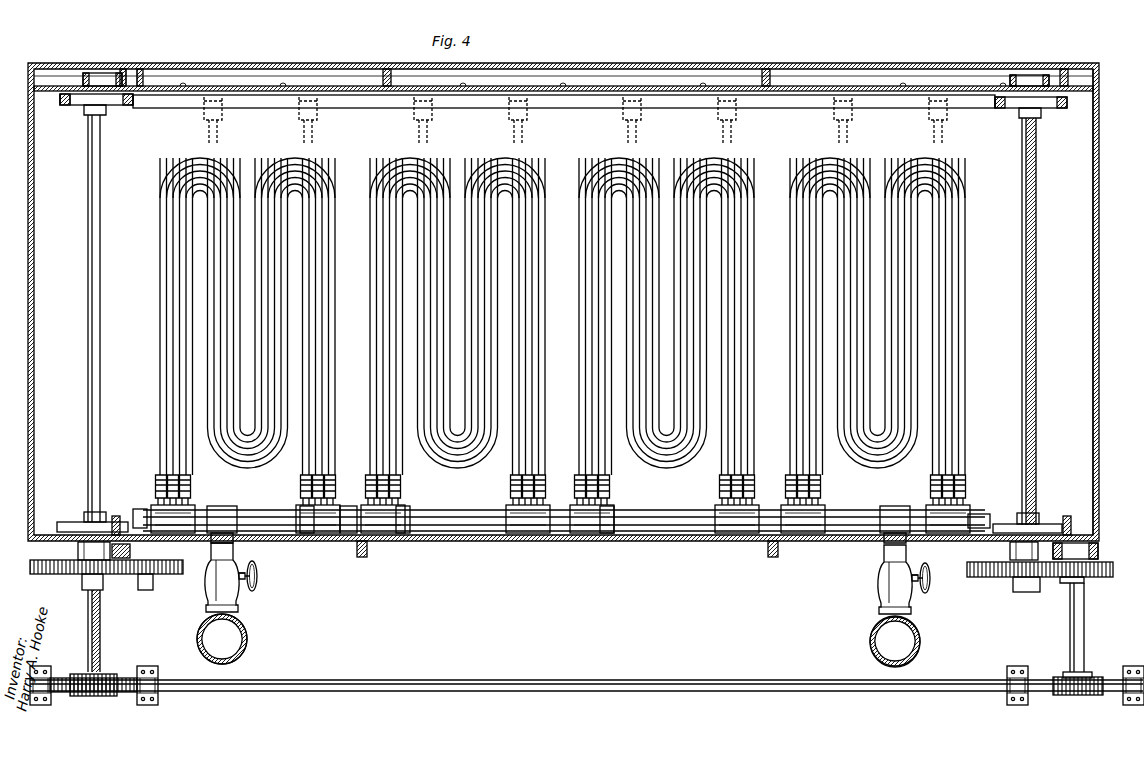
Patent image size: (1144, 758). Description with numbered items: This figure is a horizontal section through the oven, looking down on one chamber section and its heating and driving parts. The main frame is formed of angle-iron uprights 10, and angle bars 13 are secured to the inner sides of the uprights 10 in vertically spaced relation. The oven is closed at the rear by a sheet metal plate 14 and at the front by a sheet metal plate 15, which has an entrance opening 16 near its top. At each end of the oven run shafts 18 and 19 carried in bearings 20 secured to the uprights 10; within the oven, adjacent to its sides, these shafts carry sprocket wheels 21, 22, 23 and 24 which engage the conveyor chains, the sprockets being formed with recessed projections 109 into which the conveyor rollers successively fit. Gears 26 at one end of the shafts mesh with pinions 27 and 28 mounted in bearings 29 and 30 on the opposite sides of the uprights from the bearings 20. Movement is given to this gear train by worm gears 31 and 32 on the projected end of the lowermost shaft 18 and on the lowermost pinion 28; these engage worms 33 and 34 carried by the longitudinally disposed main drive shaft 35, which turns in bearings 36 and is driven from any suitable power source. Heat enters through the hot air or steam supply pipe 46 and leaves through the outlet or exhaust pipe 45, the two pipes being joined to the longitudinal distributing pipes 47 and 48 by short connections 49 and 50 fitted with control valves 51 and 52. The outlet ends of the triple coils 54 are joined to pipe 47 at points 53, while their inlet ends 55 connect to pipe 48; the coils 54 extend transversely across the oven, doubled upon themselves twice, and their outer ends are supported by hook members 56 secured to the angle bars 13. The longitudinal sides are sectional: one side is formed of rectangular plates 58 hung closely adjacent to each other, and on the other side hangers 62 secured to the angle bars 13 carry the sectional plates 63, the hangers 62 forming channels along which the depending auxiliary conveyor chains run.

The uprights 10 is at (130, 70).
The angle bars 13 is at (572, 100).
The sheet metal plate 14 is at (30, 220).
The sheet metal plate 15 is at (1100, 195).
The entrance opening 16 is at (101, 246).
The shafts 18 is at (101, 632).
The shafts 19 is at (1037, 262).
The bearings 20 is at (90, 72).
The sprocket wheels 21 is at (72, 108).
The sprocket wheels 22 is at (60, 520).
The sprocket wheels 23 is at (66, 573).
The sprocket wheels 24 is at (1002, 522).
The gears 26 is at (990, 578).
The pinions 27 is at (148, 584).
The pinions 28 is at (1096, 580).
The bearings 29 is at (130, 551).
The bearings 30 is at (1098, 551).
The worm gear 31 is at (92, 697).
The worm gear 32 is at (1082, 695).
The worm 33 is at (110, 694).
The worm 34 is at (1068, 696).
The main drive shaft 35 is at (232, 692).
The bearings 36 is at (42, 705).
The outlet or exhaust pipe 45 is at (248, 634).
The hot air or steam supply pipe 46 is at (870, 638).
The distributing pipe 47 is at (256, 512).
The distributing pipe 48 is at (650, 532).
The short connection 49 is at (232, 583).
The short connection 50 is at (886, 580).
The control valve 51 is at (258, 578).
The control valve 52 is at (920, 576).
The points 53 is at (158, 496).
The triple coils 54 is at (164, 292).
The inlet ends 55 is at (330, 474).
The hook members 56 is at (425, 113).
The rectangular plates 58 is at (405, 534).
The hangers 62 is at (542, 84).
The sectional plates 63 is at (255, 66).
The recessed projections 109 is at (118, 106).